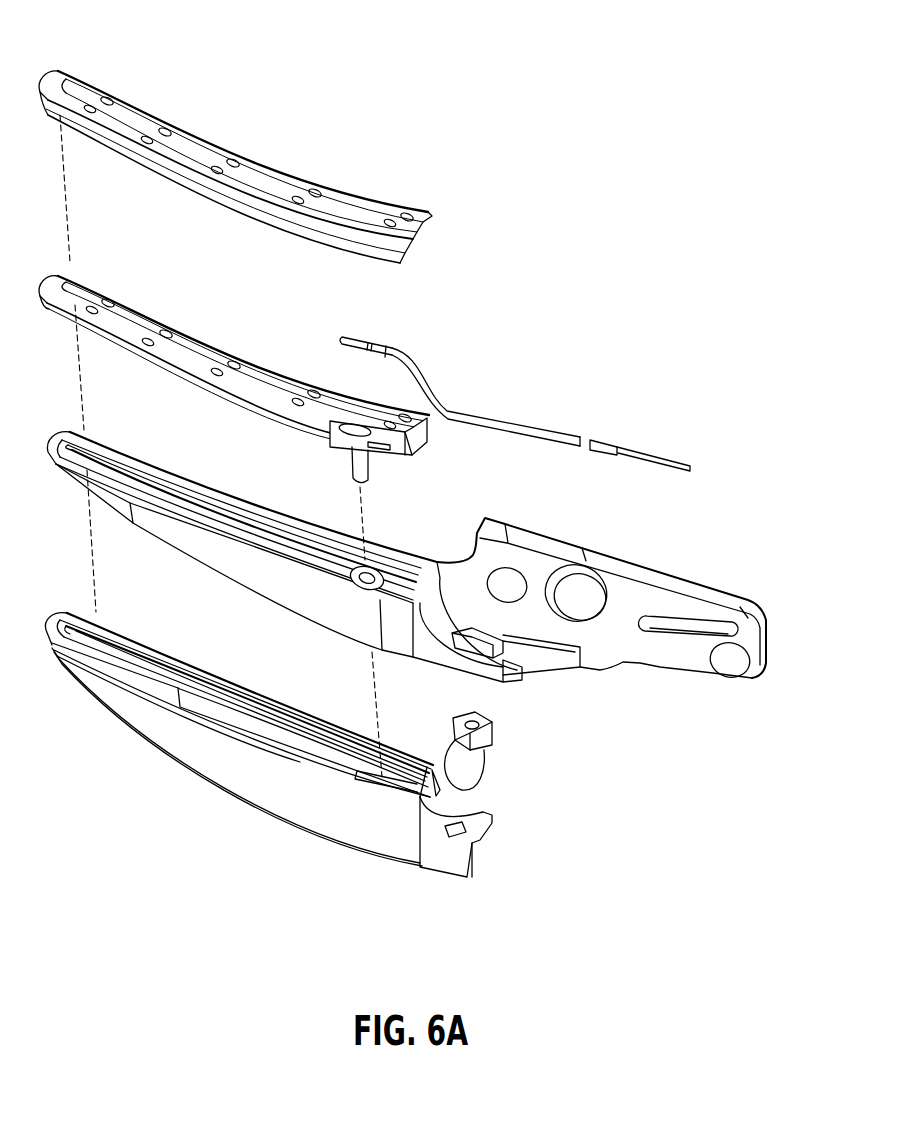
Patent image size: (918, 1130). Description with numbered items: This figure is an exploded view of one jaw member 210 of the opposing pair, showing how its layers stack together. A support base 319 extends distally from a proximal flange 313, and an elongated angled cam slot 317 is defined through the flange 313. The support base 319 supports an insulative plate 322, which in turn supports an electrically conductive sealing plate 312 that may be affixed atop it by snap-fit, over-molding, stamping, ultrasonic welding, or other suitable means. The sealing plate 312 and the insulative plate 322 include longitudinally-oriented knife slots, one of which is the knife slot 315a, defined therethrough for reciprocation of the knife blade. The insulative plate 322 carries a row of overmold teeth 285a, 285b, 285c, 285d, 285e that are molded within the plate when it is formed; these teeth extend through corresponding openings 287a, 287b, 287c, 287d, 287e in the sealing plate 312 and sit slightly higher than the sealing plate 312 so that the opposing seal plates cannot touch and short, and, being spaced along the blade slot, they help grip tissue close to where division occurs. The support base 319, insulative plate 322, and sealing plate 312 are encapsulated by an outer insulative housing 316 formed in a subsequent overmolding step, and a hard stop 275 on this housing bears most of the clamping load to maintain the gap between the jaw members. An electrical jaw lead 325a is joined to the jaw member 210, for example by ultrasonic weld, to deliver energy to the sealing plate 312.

The jaw member 210 is at (567, 224).
The electrically conductive sealing plate 312 is at (364, 203).
The knife slot 315a is at (272, 188).
The opening 287a is at (108, 98).
The opening 287b is at (166, 129).
The opening 287c is at (235, 160).
The opening 287d is at (316, 190).
The opening 287e is at (408, 214).
The overmold tooth 285a is at (109, 300).
The overmold tooth 285b is at (167, 331).
The overmold tooth 285c is at (235, 362).
The overmold tooth 285d is at (315, 391).
The overmold tooth 285e is at (407, 415).
The insulative plate 322 is at (420, 447).
The electrical jaw lead 325a is at (541, 425).
The support base 319 is at (224, 563).
The proximal flange 313 is at (707, 590).
The elongated angled cam slot 317 is at (684, 630).
The outer insulative housing 316 is at (248, 786).
The hard stop 275 is at (495, 740).